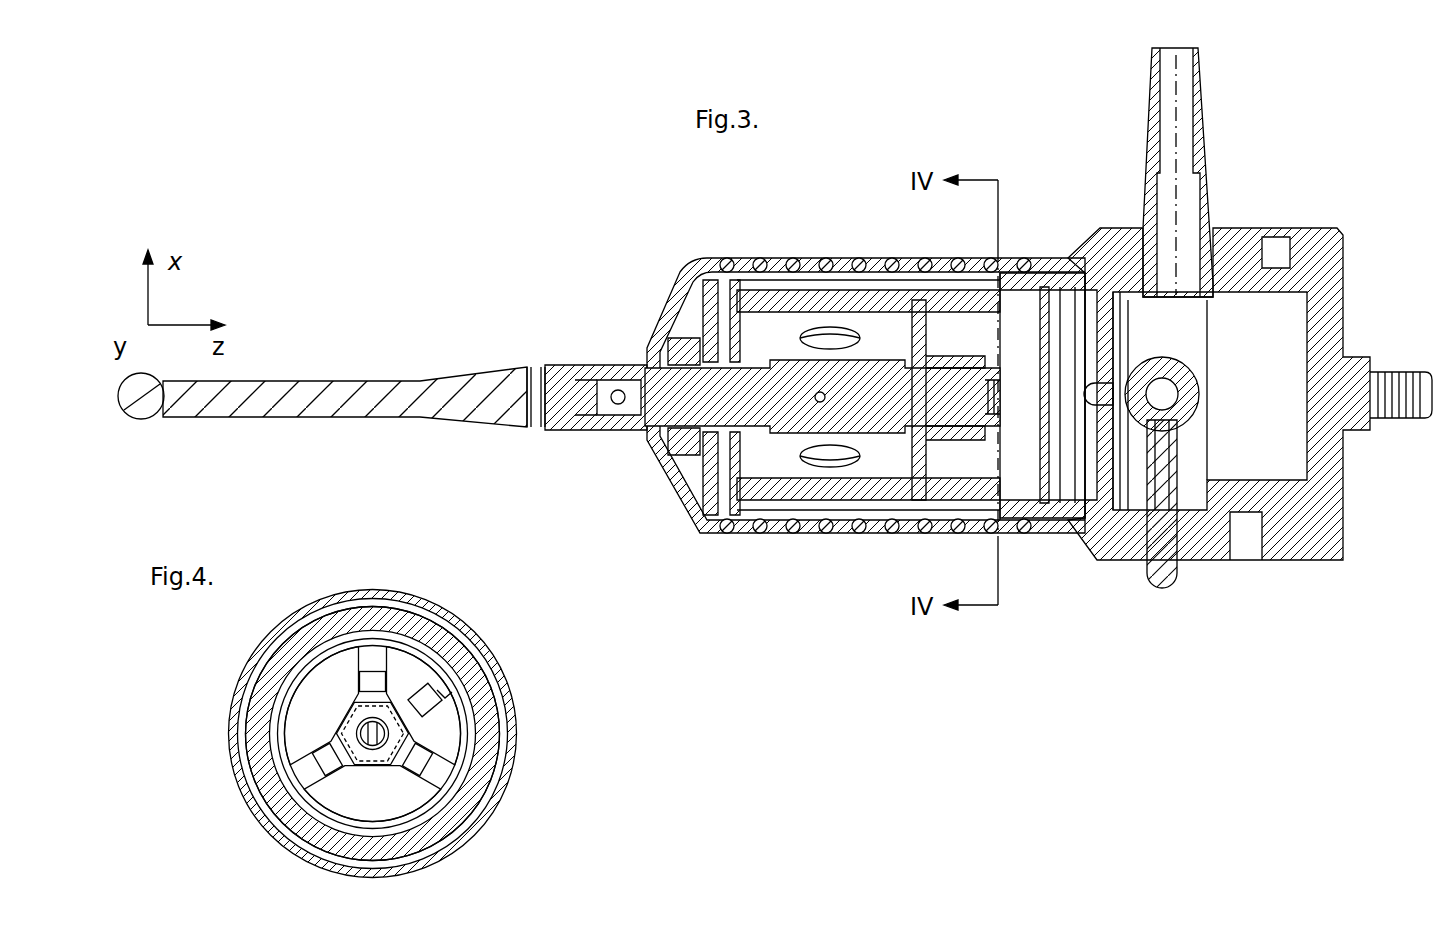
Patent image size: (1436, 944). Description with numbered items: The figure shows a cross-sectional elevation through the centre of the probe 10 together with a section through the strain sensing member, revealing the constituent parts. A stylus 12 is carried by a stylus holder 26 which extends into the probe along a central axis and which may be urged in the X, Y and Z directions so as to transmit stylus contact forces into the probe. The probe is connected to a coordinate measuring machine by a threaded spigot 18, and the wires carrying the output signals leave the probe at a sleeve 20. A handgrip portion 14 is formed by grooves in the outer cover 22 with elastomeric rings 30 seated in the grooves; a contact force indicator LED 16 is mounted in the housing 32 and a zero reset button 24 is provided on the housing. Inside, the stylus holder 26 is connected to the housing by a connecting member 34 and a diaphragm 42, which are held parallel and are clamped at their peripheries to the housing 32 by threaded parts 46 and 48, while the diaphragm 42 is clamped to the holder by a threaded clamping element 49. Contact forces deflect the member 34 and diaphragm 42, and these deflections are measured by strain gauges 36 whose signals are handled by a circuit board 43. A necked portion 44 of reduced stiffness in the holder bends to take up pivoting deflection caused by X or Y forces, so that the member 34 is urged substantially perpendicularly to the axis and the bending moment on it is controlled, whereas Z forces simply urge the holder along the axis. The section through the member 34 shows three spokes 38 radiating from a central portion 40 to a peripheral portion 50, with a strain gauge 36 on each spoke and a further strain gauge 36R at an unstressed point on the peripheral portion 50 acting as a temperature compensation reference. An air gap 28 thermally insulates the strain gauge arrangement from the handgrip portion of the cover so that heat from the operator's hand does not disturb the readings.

In FIG. 3, the probe 10 is at (963, 540).
In FIG. 3, the stylus 12 is at (335, 380).
In FIG. 3, the handgrip portion 14 is at (968, 243).
In FIG. 3, the contact force indicator LED 16 is at (1174, 590).
In FIG. 3, the threaded spigot 18 is at (1405, 420).
In FIG. 3, the sleeve 20 is at (1205, 92).
In FIG. 3, the outer cover 22 is at (678, 512).
In FIG. 4, the outer cover 22 is at (510, 726).
In FIG. 3, the zero reset button 24 is at (1170, 390).
In FIG. 3, the stylus holder 26 is at (613, 362).
In FIG. 3, the air gap 28 is at (850, 506).
In FIG. 3, the elastomeric rings 30 is at (905, 534).
In FIG. 3, the housing 32 is at (1100, 534).
In FIG. 4, the housing 32 is at (460, 660).
In FIG. 3, the connecting member 34 is at (918, 350).
In FIG. 4, the connecting member 34 is at (365, 658).
In FIG. 4, the strain gauges 36 is at (327, 757).
In FIG. 4, the further strain gauge 36R is at (423, 690).
In FIG. 4, the spokes 38 is at (318, 768).
In FIG. 4, the central portion 40 is at (372, 762).
In FIG. 3, the diaphragm 42 is at (712, 330).
In FIG. 4, the diaphragm 42 is at (405, 790).
In FIG. 3, the circuit board 43 is at (1040, 320).
In FIG. 3, the necked portion 44 is at (905, 388).
In FIG. 3, the threaded part 46 is at (853, 482).
In FIG. 3, the threaded part 48 is at (735, 300).
In FIG. 3, the threaded clamping element 49 is at (670, 445).
In FIG. 4, the peripheral portion 50 is at (375, 820).